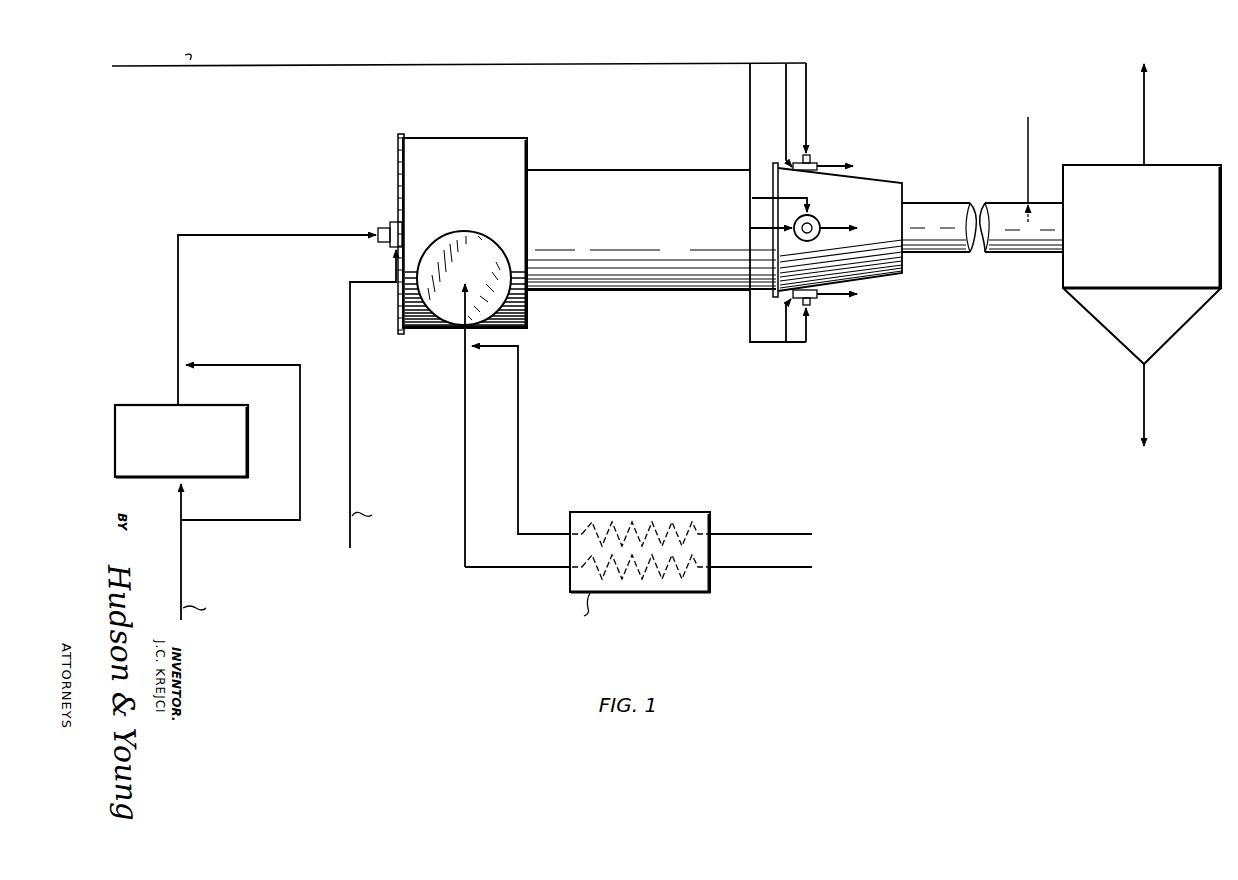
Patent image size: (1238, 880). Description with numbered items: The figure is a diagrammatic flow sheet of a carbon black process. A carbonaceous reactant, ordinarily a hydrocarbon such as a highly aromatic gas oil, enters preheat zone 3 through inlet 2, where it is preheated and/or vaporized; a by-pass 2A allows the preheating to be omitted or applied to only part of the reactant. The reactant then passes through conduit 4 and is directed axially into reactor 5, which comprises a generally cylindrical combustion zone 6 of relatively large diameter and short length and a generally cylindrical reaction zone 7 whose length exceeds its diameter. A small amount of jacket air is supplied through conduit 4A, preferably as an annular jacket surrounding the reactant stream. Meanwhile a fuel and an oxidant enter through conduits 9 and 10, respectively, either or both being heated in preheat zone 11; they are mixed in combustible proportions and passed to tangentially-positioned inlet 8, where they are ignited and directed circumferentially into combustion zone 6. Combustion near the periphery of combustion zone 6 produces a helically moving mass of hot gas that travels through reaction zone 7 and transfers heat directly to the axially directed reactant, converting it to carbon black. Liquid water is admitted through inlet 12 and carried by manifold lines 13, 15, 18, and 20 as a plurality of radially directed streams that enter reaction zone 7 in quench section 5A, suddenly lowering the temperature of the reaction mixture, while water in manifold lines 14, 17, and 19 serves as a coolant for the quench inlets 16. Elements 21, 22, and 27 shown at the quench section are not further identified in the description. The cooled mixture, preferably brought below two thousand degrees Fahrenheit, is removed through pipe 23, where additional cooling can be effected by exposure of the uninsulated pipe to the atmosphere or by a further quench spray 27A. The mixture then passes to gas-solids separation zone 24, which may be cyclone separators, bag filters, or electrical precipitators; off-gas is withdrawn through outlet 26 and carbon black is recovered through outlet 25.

The inlet 2 is at (184, 578).
The by-pass 2A is at (258, 520).
The preheat zone 3 is at (128, 406).
The conduit 4 is at (232, 234).
The conduit 4A is at (352, 438).
The reactor 5 is at (599, 156).
The quench section 5A is at (888, 186).
The combustion zone 6 is at (454, 195).
The reaction zone 7 is at (632, 206).
The tangentially-positioned inlet 8 is at (472, 270).
The conduit 9 is at (775, 568).
The conduit 10 is at (773, 534).
The preheat zone 11 is at (656, 512).
The inlet 12 is at (318, 66).
The manifold line 13 is at (808, 95).
The manifold line 14 is at (786, 102).
The manifold line 15 is at (750, 92).
The quench inlets 16 is at (812, 171).
The manifold line 17 is at (766, 227).
The manifold line 18 is at (792, 200).
The manifold line 19 is at (786, 316).
The manifold line 20 is at (773, 342).
The upper quench outlet 21 is at (857, 170).
The lower quench outlet 22 is at (852, 296).
The pipe 23 is at (955, 254).
The gas-solids separation zone 24 is at (1137, 320).
The outlet 25 is at (1146, 396).
The outlet 26 is at (1146, 99).
The central quench spray 27 is at (847, 226).
The quench spray 27A is at (1030, 123).